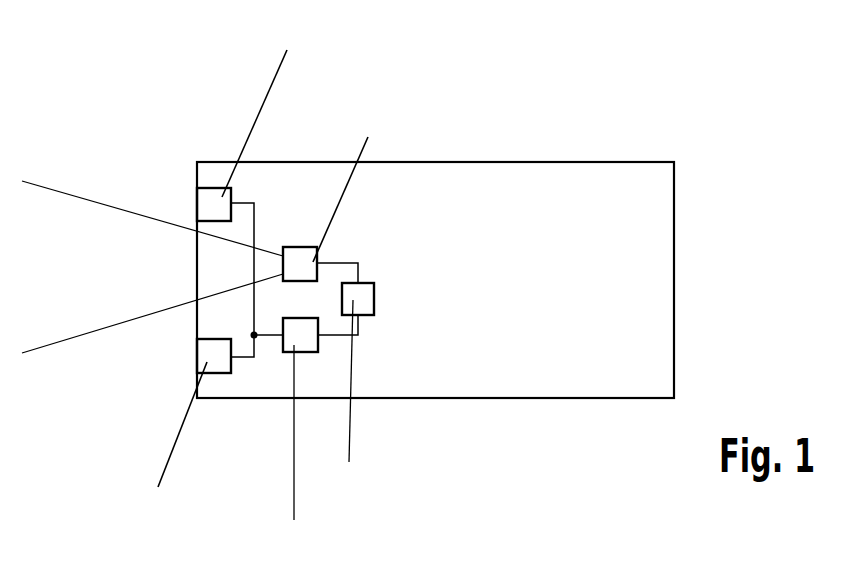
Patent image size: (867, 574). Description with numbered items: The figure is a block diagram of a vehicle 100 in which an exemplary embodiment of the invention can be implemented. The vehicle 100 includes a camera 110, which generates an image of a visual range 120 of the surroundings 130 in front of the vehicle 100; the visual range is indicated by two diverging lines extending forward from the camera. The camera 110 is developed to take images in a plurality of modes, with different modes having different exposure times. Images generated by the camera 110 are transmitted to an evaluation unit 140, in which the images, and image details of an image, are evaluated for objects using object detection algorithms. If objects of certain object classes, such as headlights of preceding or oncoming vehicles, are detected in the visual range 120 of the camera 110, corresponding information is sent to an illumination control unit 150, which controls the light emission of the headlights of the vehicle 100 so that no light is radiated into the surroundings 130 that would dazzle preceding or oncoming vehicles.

The vehicle 100 is at (674, 277).
The camera 110 is at (302, 258).
The visual range 120 is at (156, 277).
The surroundings 130 is at (156, 382).
The evaluation unit 140 is at (370, 298).
The illumination control unit 150 is at (305, 347).